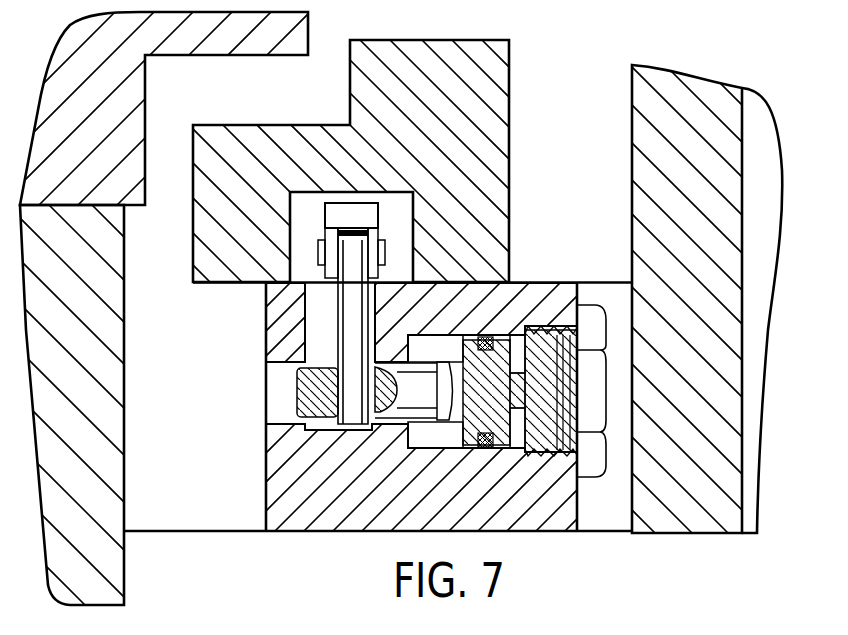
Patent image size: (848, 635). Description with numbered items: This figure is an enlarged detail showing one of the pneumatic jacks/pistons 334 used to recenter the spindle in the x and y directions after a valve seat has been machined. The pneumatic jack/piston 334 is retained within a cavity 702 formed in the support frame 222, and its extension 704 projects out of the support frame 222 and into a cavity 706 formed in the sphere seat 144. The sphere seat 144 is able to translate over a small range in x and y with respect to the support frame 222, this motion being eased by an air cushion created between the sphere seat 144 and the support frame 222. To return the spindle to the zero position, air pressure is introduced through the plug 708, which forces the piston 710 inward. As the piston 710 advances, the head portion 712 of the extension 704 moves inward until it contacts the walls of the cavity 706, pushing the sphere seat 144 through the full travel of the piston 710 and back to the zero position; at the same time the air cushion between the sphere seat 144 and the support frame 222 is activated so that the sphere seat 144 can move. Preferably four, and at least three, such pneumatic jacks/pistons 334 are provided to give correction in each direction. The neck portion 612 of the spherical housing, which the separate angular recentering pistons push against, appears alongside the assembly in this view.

The sphere seat 144 is at (480, 88).
The cavity 706 is at (400, 195).
The head portion 712 is at (372, 216).
The cavity 702 is at (497, 281).
The extension 704 is at (348, 313).
The neck portion 612 is at (115, 377).
The support frame 222 is at (280, 460).
The pneumatic jack/piston 334 is at (383, 415).
The piston 710 is at (497, 413).
The plug 708 is at (595, 467).